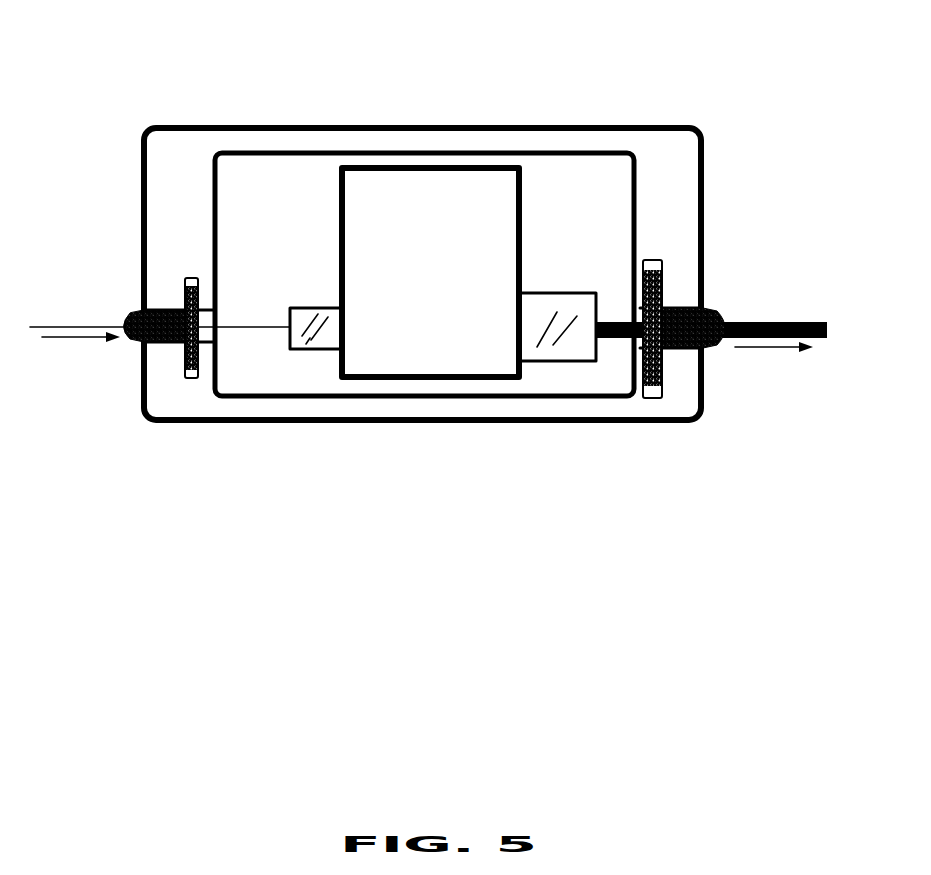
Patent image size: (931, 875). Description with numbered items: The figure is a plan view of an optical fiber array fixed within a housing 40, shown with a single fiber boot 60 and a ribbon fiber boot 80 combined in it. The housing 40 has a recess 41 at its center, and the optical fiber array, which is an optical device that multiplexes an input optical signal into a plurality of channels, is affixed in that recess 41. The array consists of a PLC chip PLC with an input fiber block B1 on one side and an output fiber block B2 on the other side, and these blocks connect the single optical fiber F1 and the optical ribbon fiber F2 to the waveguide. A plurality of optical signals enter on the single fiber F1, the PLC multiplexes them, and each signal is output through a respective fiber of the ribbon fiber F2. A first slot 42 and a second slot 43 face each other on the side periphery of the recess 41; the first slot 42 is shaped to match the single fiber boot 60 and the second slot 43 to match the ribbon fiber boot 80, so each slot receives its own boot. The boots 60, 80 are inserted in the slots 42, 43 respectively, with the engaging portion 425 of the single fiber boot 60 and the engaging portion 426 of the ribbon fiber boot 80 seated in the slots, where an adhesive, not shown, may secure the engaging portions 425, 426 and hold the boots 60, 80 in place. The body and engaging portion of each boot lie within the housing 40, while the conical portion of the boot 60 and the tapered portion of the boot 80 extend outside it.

The housing 40 is at (447, 436).
The recess 41 is at (248, 365).
The first slot 42 is at (174, 358).
The second slot 43 is at (678, 364).
The single fiber boot 60 is at (138, 306).
The ribbon fiber boot 80 is at (693, 308).
The engaging portion 425 is at (191, 277).
The engaging portion 426 is at (655, 260).
The PLC chip PLC is at (467, 212).
The input fiber block B1 is at (292, 306).
The output fiber block B2 is at (540, 304).
The single optical fiber F1 is at (60, 326).
The optical ribbon fiber F2 is at (777, 320).